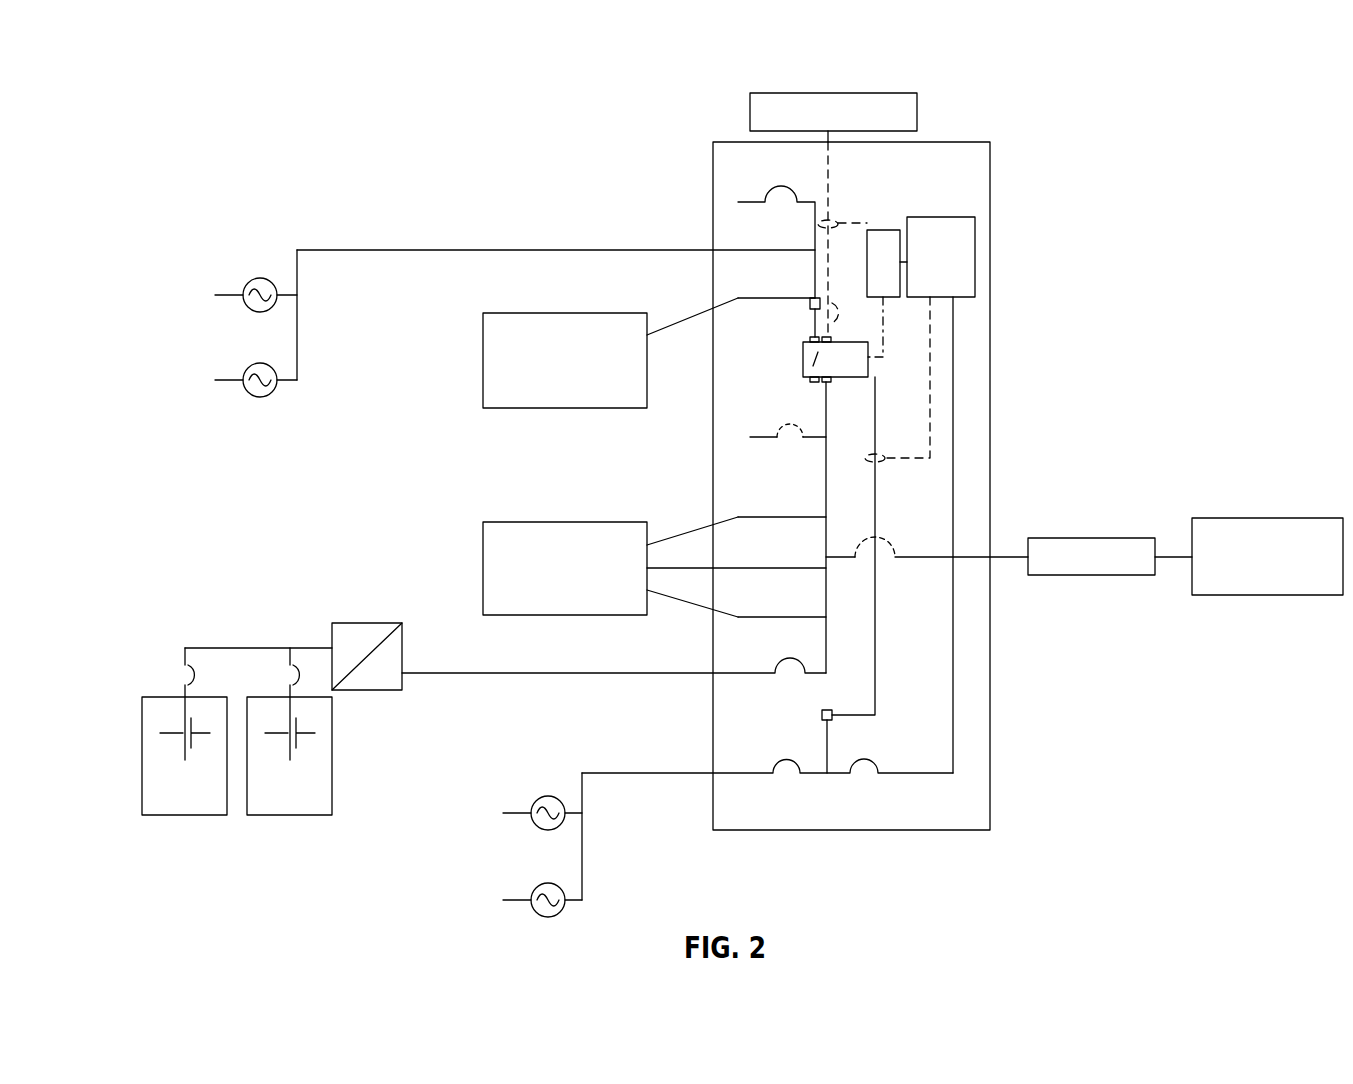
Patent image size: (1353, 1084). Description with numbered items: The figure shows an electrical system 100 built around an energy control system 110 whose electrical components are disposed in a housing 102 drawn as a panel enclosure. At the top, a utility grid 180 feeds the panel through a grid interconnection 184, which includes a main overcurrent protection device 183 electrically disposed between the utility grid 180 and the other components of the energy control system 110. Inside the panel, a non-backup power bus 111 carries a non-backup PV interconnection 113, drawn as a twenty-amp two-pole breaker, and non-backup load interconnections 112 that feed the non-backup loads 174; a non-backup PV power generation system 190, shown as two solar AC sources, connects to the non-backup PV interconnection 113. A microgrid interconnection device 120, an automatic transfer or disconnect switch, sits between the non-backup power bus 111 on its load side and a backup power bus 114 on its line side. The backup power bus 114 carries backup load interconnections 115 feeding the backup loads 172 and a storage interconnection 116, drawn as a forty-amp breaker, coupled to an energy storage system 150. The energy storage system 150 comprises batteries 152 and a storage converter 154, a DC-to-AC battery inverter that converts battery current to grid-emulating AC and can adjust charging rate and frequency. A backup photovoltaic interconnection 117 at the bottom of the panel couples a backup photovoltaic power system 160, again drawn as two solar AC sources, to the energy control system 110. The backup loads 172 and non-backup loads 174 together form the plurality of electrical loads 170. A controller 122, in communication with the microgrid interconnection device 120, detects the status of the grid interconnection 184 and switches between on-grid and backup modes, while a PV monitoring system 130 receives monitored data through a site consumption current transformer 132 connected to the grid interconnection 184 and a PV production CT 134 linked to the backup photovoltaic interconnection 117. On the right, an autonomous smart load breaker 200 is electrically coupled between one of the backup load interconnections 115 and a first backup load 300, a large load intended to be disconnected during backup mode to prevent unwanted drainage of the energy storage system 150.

The electrical system 100 is at (366, 84).
The energy control system 110 is at (702, 109).
The housing 102 is at (990, 672).
The non-backup power bus 111 is at (817, 300).
The non-backup load interconnection 112 is at (737, 298).
The non-backup PV interconnection 113 is at (725, 248).
The backup power bus 114 is at (823, 390).
The backup load interconnection 115 is at (738, 517).
The storage interconnection 116 is at (722, 677).
The backup photovoltaic interconnection 117 is at (827, 755).
The microgrid interconnection device 120 is at (803, 352).
The controller 122 is at (893, 230).
The PV monitoring system 130 is at (975, 258).
The site consumption current transformer 132 is at (930, 373).
The PV production CT 134 is at (873, 223).
The energy storage system 150 is at (151, 646).
The batteries 152 is at (142, 757).
The storage converter 154 is at (365, 622).
The backup photovoltaic power system 160 is at (498, 801).
The plurality of electrical loads 170 is at (431, 460).
The backup loads 172 is at (483, 567).
The non-backup loads 174 is at (483, 360).
The utility grid 180 is at (917, 113).
The main overcurrent protection device 183 is at (835, 313).
The grid interconnection 184 is at (828, 183).
The non-backup PV power generation system 190 is at (206, 291).
The autonomous smart load breaker 200 is at (1090, 538).
The first backup load 300 is at (1265, 518).